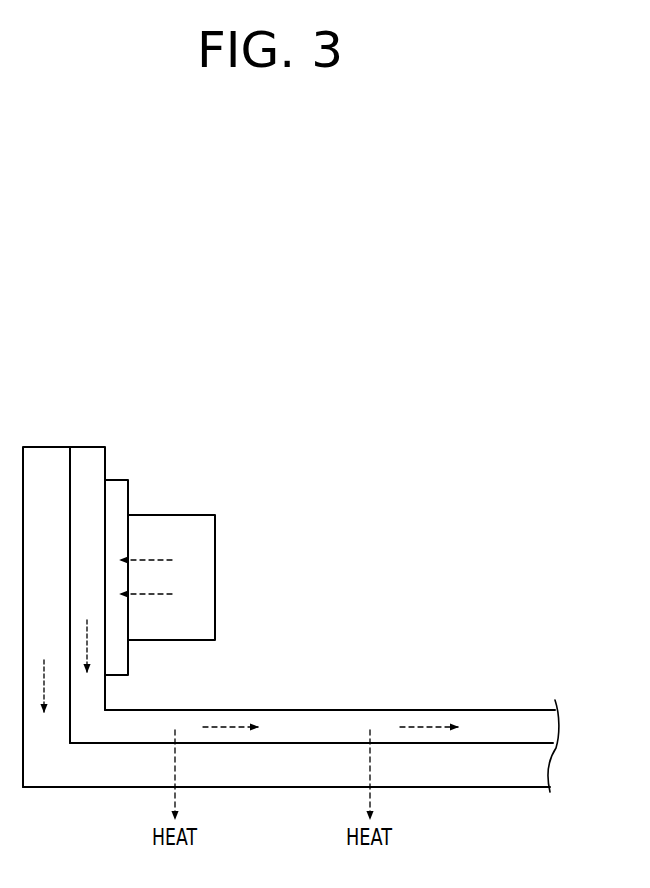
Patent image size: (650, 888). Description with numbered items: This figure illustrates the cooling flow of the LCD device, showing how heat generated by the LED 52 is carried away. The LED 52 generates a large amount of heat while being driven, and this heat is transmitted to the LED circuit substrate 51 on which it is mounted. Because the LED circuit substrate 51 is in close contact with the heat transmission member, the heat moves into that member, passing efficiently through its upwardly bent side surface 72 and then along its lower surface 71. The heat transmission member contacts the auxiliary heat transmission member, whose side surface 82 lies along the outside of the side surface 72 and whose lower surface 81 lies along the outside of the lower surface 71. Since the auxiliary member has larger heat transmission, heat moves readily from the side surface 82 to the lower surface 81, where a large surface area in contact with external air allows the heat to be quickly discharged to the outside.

The side surface of the auxiliary heat transmission member 82 is at (47, 450).
The lower surface of the auxiliary heat transmission member 81 is at (237, 775).
The side surface of the heat transmission member 72 is at (87, 450).
The lower surface of the heat transmission member 71 is at (308, 738).
The LED circuit substrate 51 is at (117, 485).
The LED 52 is at (208, 558).